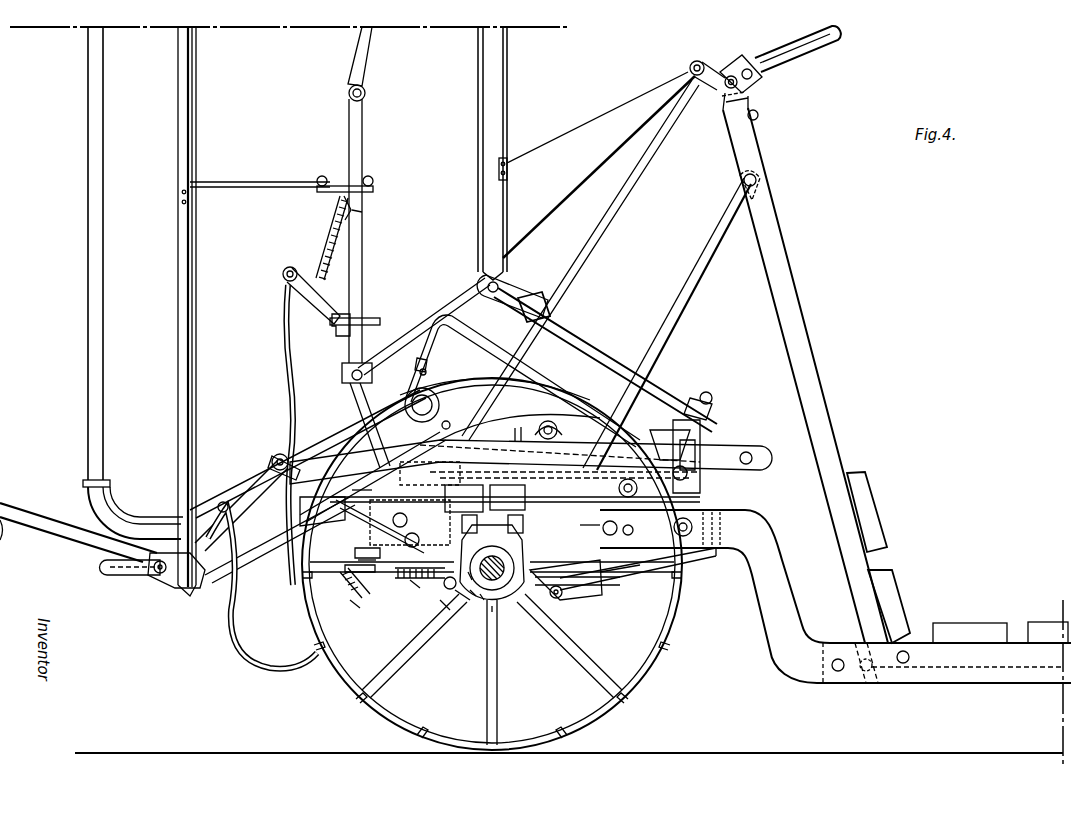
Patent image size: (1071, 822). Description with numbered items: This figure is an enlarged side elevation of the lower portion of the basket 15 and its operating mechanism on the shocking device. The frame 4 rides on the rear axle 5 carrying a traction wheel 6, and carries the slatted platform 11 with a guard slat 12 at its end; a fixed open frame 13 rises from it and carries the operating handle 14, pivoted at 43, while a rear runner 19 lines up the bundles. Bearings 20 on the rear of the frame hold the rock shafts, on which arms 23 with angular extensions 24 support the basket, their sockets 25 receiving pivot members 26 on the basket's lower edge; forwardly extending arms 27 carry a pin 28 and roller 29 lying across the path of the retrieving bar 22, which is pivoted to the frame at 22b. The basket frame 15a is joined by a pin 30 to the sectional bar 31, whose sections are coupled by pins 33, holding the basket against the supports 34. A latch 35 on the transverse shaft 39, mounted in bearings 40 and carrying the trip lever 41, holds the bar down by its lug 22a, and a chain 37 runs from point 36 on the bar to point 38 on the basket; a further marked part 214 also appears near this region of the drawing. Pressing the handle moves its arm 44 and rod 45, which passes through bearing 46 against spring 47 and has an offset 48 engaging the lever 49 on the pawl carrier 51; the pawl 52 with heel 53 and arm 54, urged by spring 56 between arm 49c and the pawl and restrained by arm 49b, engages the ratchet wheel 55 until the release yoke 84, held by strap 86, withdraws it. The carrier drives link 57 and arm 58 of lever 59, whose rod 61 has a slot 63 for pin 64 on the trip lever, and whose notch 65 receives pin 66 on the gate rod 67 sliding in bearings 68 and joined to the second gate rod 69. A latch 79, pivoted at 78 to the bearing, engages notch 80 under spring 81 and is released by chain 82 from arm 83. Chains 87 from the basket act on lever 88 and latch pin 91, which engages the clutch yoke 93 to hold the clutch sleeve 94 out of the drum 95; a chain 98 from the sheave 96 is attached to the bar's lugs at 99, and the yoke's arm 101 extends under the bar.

The frame 4 is at (770, 548).
The rear axle 5 is at (482, 598).
The traction wheel 6 is at (565, 400).
The platform 11 is at (1012, 610).
The guard slat 12 is at (895, 570).
The fixed open frame 13 is at (758, 108).
The operating handle 14 is at (795, 58).
The basket 15 is at (197, 66).
The frame of the basket 15a is at (325, 422).
The rear runner 19 is at (95, 90).
The bearing 20 is at (455, 392).
The retrieving bar 22 is at (350, 470).
The lug 22a is at (678, 445).
The pivot of retrieving bar 22b is at (359, 492).
The arm 23 is at (330, 462).
The angular extension 24 is at (48, 520).
The socket 25 is at (195, 590).
The pivot member 26 is at (172, 580).
The forwardly extending arm 27 is at (518, 426).
The pin 28 is at (603, 528).
The roller 29 is at (619, 530).
The pin 30 is at (486, 283).
The bar 31 is at (583, 347).
The pin 33 is at (545, 300).
The support 34 is at (438, 324).
The latch 35 is at (702, 488).
The chain connection on bar 36 is at (558, 430).
The chain 37 is at (296, 462).
The chain connection on basket 38 is at (272, 456).
The transverse shaft 39 is at (695, 528).
The bearing 40 is at (700, 556).
The trip lever 41 is at (712, 500).
The pivot of handle 43 is at (720, 70).
The arm 44 is at (690, 68).
The rod 45 is at (648, 158).
The bearing 46 is at (366, 594).
The spring 47 is at (358, 604).
The offset 48 is at (355, 550).
The lever 49 is at (392, 523).
The second arm of lever 49b is at (415, 578).
The third arm of lever 49c is at (360, 555).
The pawl carrier 51 is at (462, 518).
The pawl 52 is at (509, 509).
The heel 53 is at (458, 592).
The arm 54 is at (440, 602).
The ratchet wheel 55 is at (520, 600).
The spring 56 is at (440, 585).
The link 57 is at (434, 480).
The arm of lever 58 is at (450, 416).
The lever 59 is at (385, 364).
The rod 61 is at (492, 468).
The slot 63 is at (690, 470).
The pin 64 is at (634, 492).
The notch 65 is at (366, 376).
The pin 66 is at (341, 374).
The gate rod 67 is at (363, 298).
The bearing 68 is at (362, 180).
The second gate rod 69 is at (365, 52).
The pivot of latch 78 is at (333, 326).
The latch 79 is at (284, 270).
The notch 80 is at (358, 222).
The spring 81 is at (328, 238).
The chain 82 is at (285, 322).
The arm 83 is at (322, 511).
The release yoke 84 is at (555, 600).
The strap 86 is at (610, 576).
The chain 87 is at (223, 500).
The lever 88 is at (352, 566).
The spring-pressed latch pin 91 is at (412, 588).
The clutch yoke 93 is at (545, 560).
The clutch sleeve 94 is at (468, 580).
The drum 95 is at (472, 596).
The sheave 96 is at (488, 608).
The chain 98 is at (592, 530).
The lug attachment 99 is at (552, 470).
The arm 101 is at (464, 498).
The disc 214 is at (422, 405).